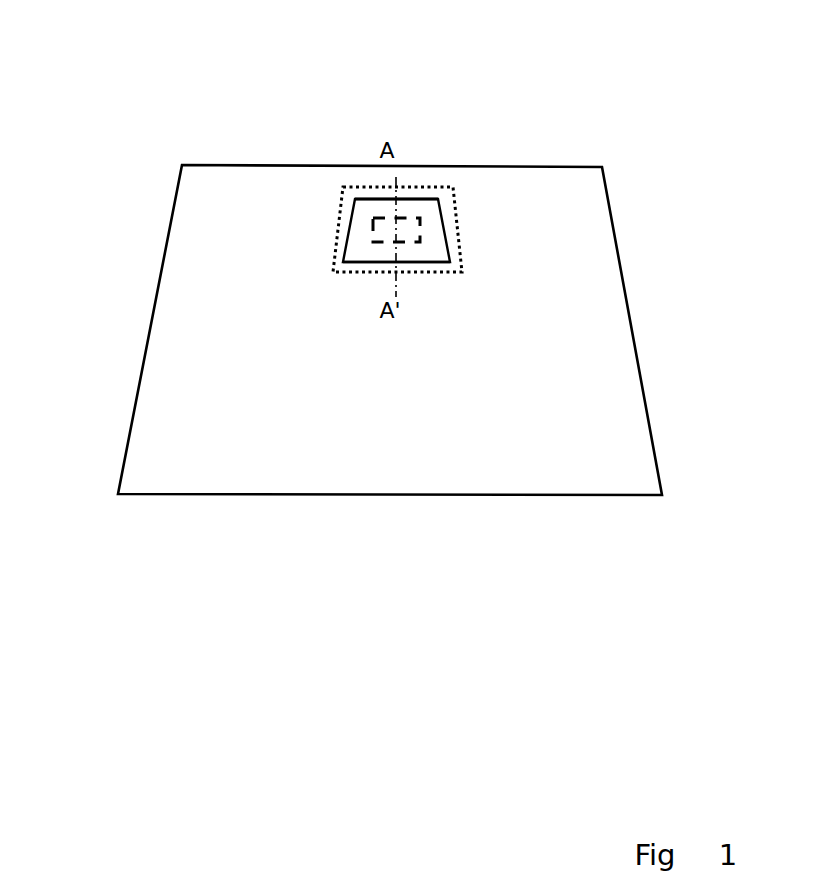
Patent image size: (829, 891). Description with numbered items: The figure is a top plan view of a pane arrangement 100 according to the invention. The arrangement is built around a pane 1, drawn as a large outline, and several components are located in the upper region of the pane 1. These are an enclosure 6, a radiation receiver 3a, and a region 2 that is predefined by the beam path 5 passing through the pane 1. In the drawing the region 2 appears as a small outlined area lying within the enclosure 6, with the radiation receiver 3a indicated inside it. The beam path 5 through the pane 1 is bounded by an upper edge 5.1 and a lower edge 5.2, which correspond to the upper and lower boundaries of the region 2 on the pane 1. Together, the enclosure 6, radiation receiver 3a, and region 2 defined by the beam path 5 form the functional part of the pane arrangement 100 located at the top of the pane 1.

The pane 1 is at (182, 165).
The region 2 is at (386, 199).
The radiation receiver 3a is at (407, 220).
The beam path 5 is at (364, 250).
The upper edge 5.1 is at (366, 197).
The lower edge 5.2 is at (376, 265).
The enclosure 6 is at (450, 189).
The pane arrangement 100 is at (612, 133).